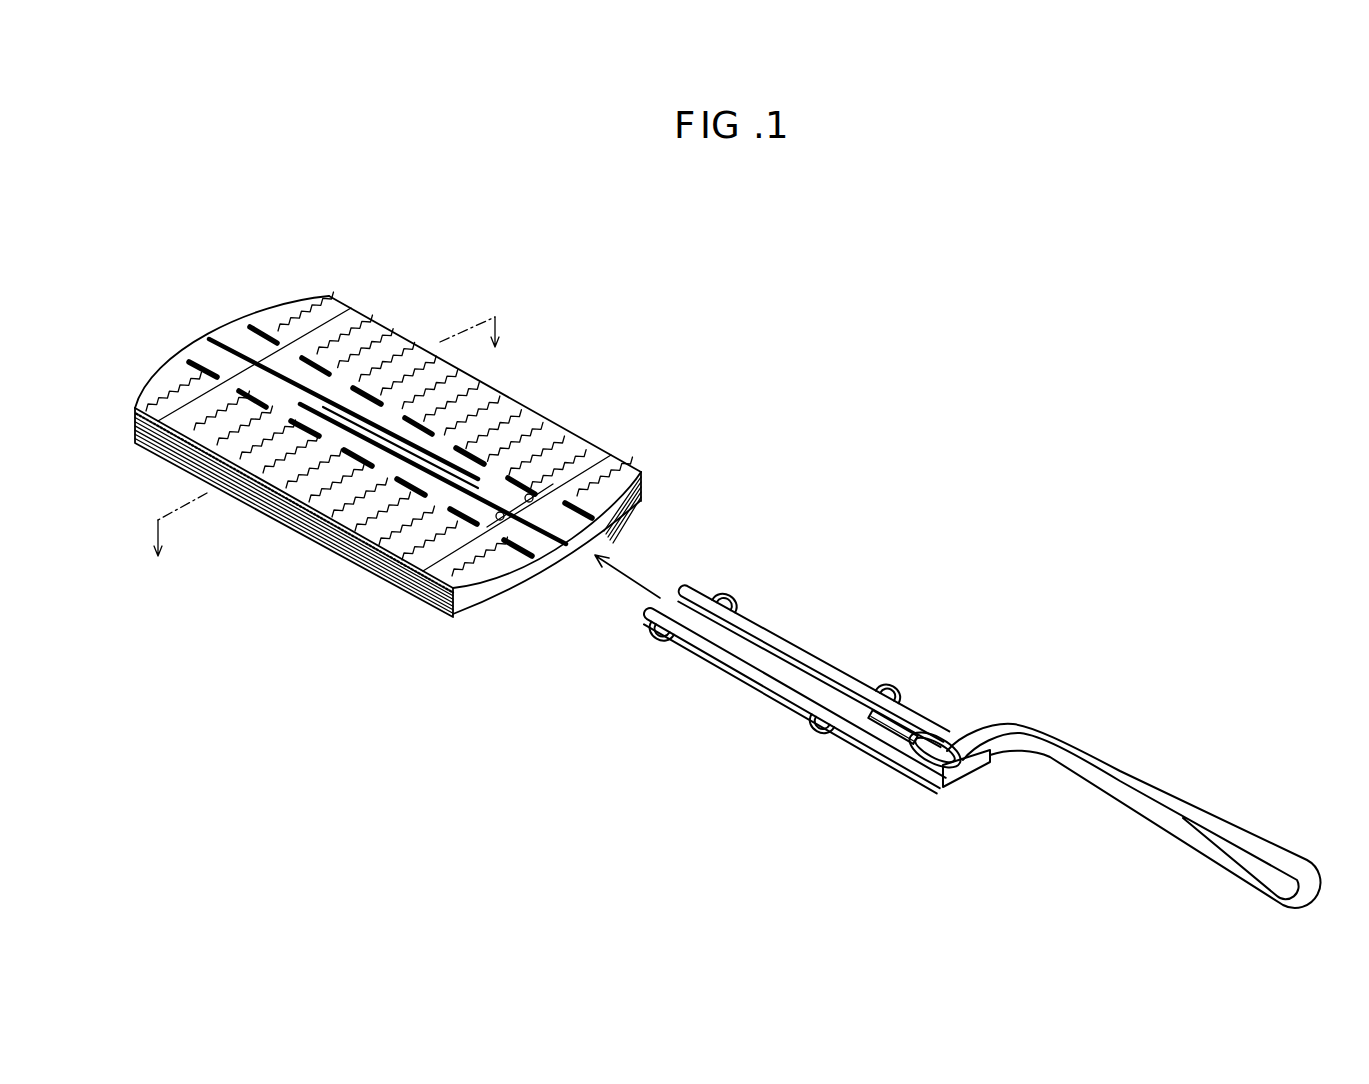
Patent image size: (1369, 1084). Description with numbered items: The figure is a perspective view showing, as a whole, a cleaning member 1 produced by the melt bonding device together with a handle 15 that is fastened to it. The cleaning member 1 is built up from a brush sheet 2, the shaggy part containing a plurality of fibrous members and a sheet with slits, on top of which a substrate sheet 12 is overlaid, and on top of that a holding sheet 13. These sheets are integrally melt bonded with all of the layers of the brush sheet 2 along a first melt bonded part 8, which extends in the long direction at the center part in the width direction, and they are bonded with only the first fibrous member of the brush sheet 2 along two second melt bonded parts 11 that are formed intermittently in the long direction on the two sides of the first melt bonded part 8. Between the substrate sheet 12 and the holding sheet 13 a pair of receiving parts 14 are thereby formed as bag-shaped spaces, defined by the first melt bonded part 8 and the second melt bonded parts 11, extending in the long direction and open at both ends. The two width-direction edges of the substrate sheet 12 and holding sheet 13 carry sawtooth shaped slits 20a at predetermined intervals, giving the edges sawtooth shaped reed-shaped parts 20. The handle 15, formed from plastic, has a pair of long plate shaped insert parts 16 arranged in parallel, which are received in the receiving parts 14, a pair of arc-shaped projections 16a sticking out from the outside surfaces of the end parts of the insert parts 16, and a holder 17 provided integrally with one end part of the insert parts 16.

The cleaning member 1 is at (410, 288).
The brush sheet 2 is at (280, 525).
The first melt bonded part 8 is at (226, 344).
The second melt bonded parts 11 is at (191, 362).
The substrate sheet 12 is at (639, 476).
The holding sheet 13 is at (582, 472).
The receiving parts 14 is at (532, 503).
The handle 15 is at (1042, 695).
The insert parts 16 is at (765, 678).
The arc-shaped projections 16a is at (650, 642).
The holder 17 is at (1100, 750).
The reed-shaped parts 20 is at (597, 454).
The sawtooth shaped slits 20a is at (554, 431).